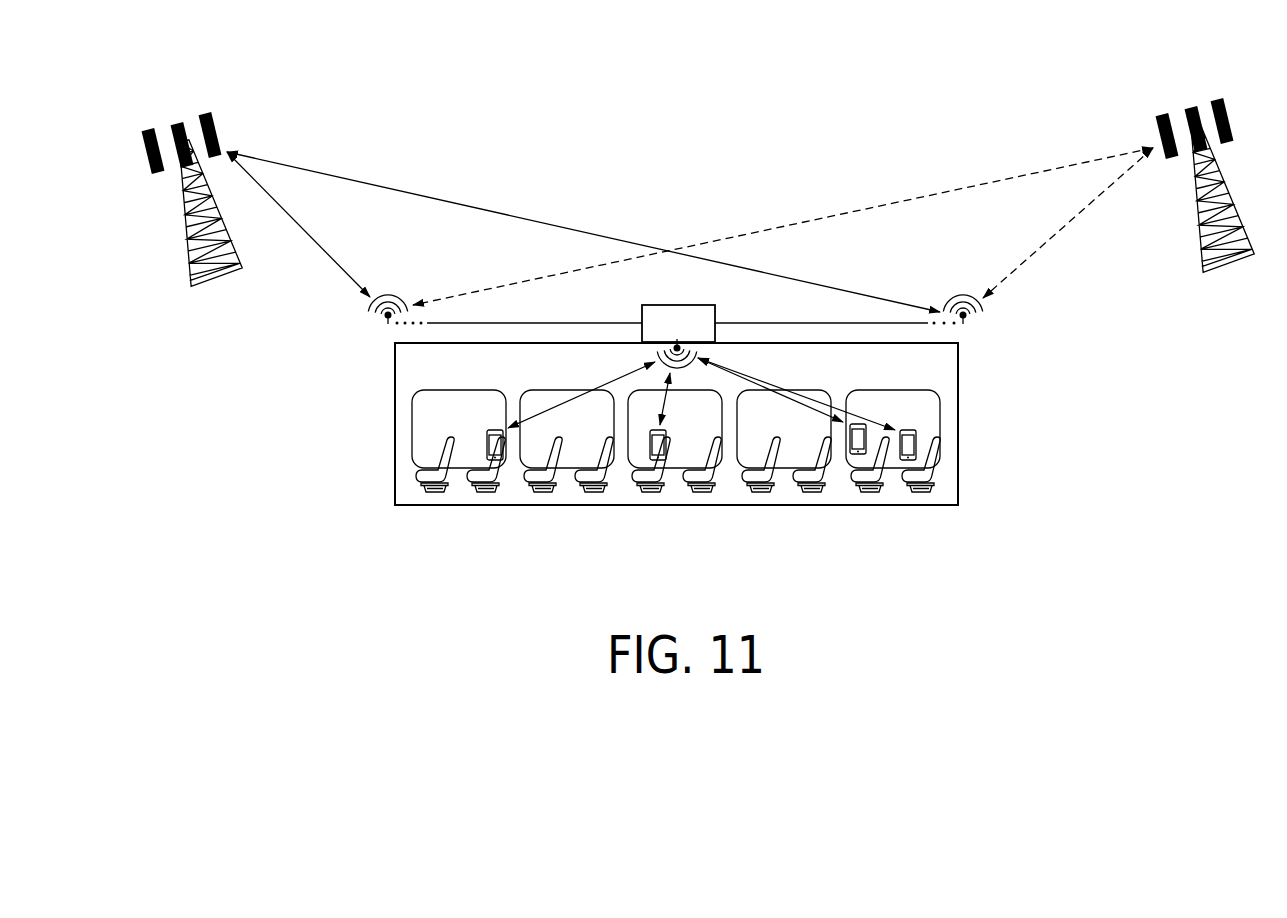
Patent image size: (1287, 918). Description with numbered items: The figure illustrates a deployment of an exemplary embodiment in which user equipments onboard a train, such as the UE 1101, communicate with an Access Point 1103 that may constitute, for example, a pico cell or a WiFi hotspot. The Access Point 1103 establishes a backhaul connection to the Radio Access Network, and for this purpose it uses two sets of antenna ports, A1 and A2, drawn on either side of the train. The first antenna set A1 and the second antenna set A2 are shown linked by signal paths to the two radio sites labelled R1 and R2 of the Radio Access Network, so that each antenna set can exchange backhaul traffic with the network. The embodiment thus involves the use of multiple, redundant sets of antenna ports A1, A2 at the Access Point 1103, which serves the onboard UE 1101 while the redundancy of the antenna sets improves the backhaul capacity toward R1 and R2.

The UE 1101 is at (500, 430).
The Access Point 1103 is at (658, 303).
The base station / remote radio head R1 is at (193, 178).
The base station / remote radio head R2 is at (1206, 168).
The antenna port set A1 is at (387, 288).
The antenna port set A2 is at (968, 292).